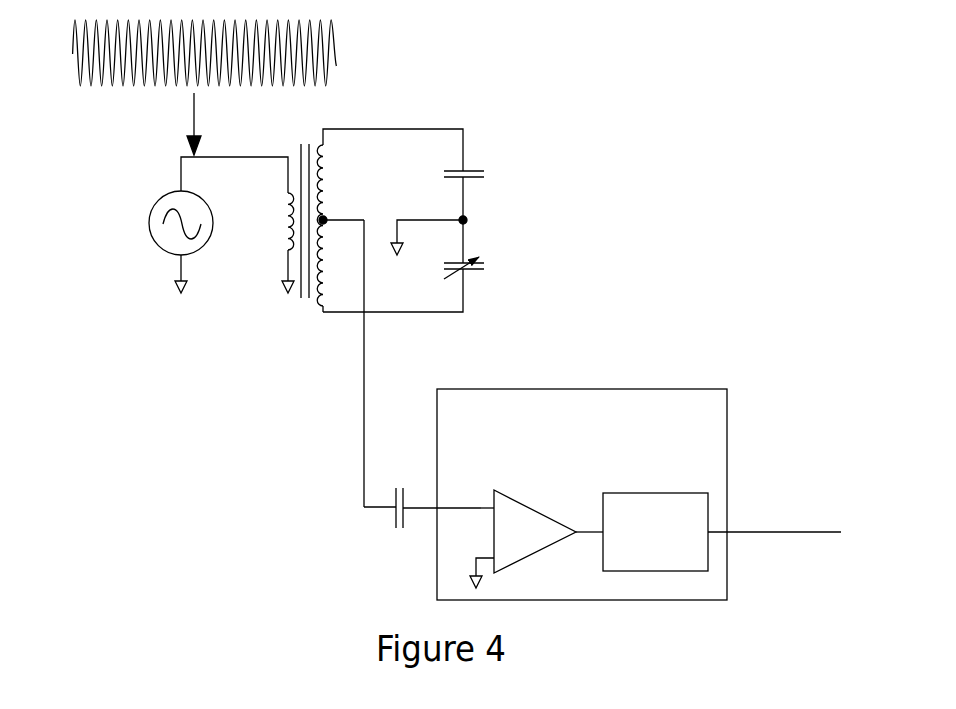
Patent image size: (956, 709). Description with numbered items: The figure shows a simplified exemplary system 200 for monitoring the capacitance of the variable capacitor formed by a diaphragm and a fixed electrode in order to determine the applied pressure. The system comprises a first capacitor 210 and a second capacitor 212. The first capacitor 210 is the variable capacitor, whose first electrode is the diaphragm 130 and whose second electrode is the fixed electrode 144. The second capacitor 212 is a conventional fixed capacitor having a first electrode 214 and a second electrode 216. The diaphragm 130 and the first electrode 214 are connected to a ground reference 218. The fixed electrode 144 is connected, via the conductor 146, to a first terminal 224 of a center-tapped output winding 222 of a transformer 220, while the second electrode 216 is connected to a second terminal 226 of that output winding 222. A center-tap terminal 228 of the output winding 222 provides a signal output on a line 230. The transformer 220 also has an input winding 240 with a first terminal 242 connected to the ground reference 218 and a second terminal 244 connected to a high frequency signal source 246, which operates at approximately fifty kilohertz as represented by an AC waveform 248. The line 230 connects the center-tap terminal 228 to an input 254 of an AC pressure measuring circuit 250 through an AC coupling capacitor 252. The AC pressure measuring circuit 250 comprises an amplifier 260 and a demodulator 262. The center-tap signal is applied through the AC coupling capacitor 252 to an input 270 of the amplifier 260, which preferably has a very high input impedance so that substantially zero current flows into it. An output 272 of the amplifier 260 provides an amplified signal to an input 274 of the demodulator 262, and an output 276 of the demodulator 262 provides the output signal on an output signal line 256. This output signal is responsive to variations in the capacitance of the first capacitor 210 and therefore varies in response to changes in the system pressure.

The system 200 is at (138, 298).
The AC waveform 248 is at (349, 56).
The input (primary) winding 240 is at (272, 190).
The high frequency signal source 246 is at (208, 247).
The second terminal 244 is at (278, 195).
The first terminal 242 is at (285, 250).
The ground reference 218 is at (285, 281).
The transformer 220 is at (305, 307).
The second terminal 226 is at (324, 147).
The center-tapped output (secondary) winding 222 is at (332, 187).
The first terminal 224 is at (323, 316).
The center-tap terminal 228 is at (324, 220).
The conductor 146 is at (413, 315).
The second capacitor 212 is at (487, 177).
The second electrode 216 is at (453, 172).
The first electrode 214 is at (469, 181).
The diaphragm 130 is at (459, 262).
The first capacitor 210 is at (512, 266).
The fixed electrode 144 is at (470, 273).
The line 230 is at (362, 368).
The AC pressure measuring circuit 250 is at (620, 391).
The AC coupling capacitor 252 is at (394, 497).
The input 254 is at (432, 510).
The input 270 is at (490, 508).
The amplifier 260 is at (539, 510).
The output 272 is at (581, 539).
The input 274 is at (598, 533).
The demodulator 262 is at (628, 495).
The output 276 is at (712, 533).
The output signal line 256 is at (803, 536).